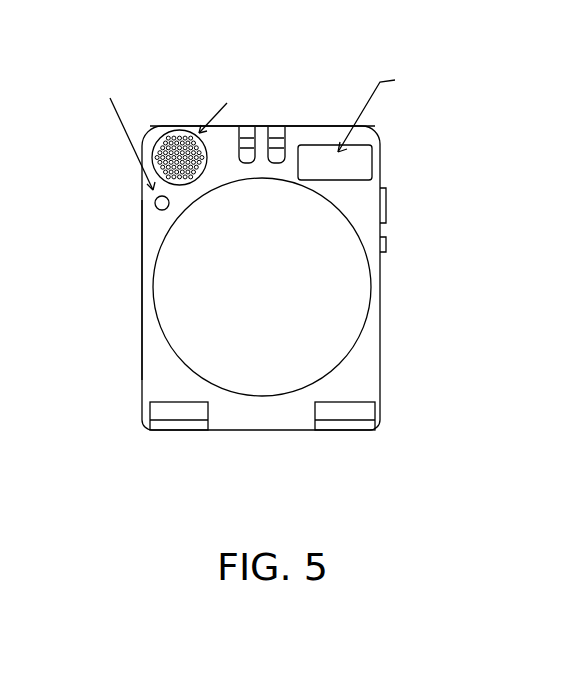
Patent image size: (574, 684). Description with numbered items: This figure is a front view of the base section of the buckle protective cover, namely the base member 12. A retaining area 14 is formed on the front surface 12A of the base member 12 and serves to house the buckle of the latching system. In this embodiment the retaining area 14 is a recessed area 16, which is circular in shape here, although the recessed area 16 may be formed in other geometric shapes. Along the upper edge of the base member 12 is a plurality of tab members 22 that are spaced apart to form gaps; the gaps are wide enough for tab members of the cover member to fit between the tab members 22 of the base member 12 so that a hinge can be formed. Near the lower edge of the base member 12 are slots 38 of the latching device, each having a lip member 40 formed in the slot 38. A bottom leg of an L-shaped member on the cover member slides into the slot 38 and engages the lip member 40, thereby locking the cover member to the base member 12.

The base member 12 is at (293, 428).
The front surface 12A is at (375, 362).
The retaining area 14 is at (131, 307).
The recessed area 16 is at (257, 305).
The tab members 22 is at (250, 127).
The slots 38 is at (357, 412).
The lip member 40 is at (173, 415).